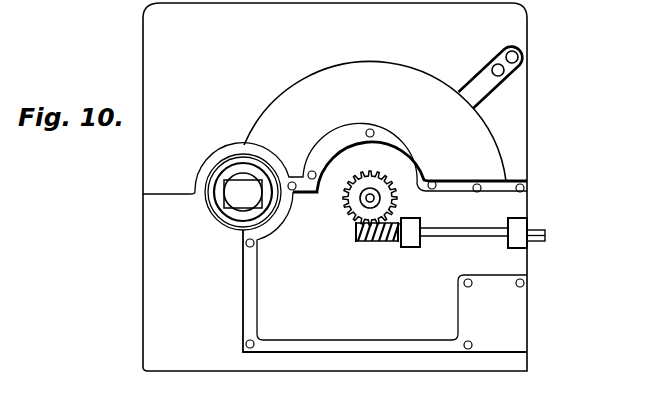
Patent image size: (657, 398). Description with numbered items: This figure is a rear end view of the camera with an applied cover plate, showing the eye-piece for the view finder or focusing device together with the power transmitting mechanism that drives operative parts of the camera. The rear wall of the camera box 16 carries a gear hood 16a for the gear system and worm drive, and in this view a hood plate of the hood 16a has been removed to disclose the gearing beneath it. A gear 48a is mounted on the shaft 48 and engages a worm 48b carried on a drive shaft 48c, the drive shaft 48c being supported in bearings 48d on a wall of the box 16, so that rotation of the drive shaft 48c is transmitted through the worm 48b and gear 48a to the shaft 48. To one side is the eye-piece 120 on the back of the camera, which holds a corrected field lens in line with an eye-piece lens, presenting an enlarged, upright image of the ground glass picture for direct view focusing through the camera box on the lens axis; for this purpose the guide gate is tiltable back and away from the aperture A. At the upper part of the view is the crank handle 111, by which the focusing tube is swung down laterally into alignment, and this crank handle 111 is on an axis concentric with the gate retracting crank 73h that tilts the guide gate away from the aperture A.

The box 16 is at (517, 138).
The gear hood 16a is at (488, 163).
The eye-piece 120 is at (213, 218).
The aperture A is at (235, 186).
The shaft 48 is at (347, 205).
The gear 48a is at (378, 199).
The worm 48b is at (360, 245).
The drive shaft 48c is at (460, 236).
The bearings 48d is at (408, 248).
The crank handle 111 is at (480, 78).
The gate retracting crank 73h is at (504, 51).